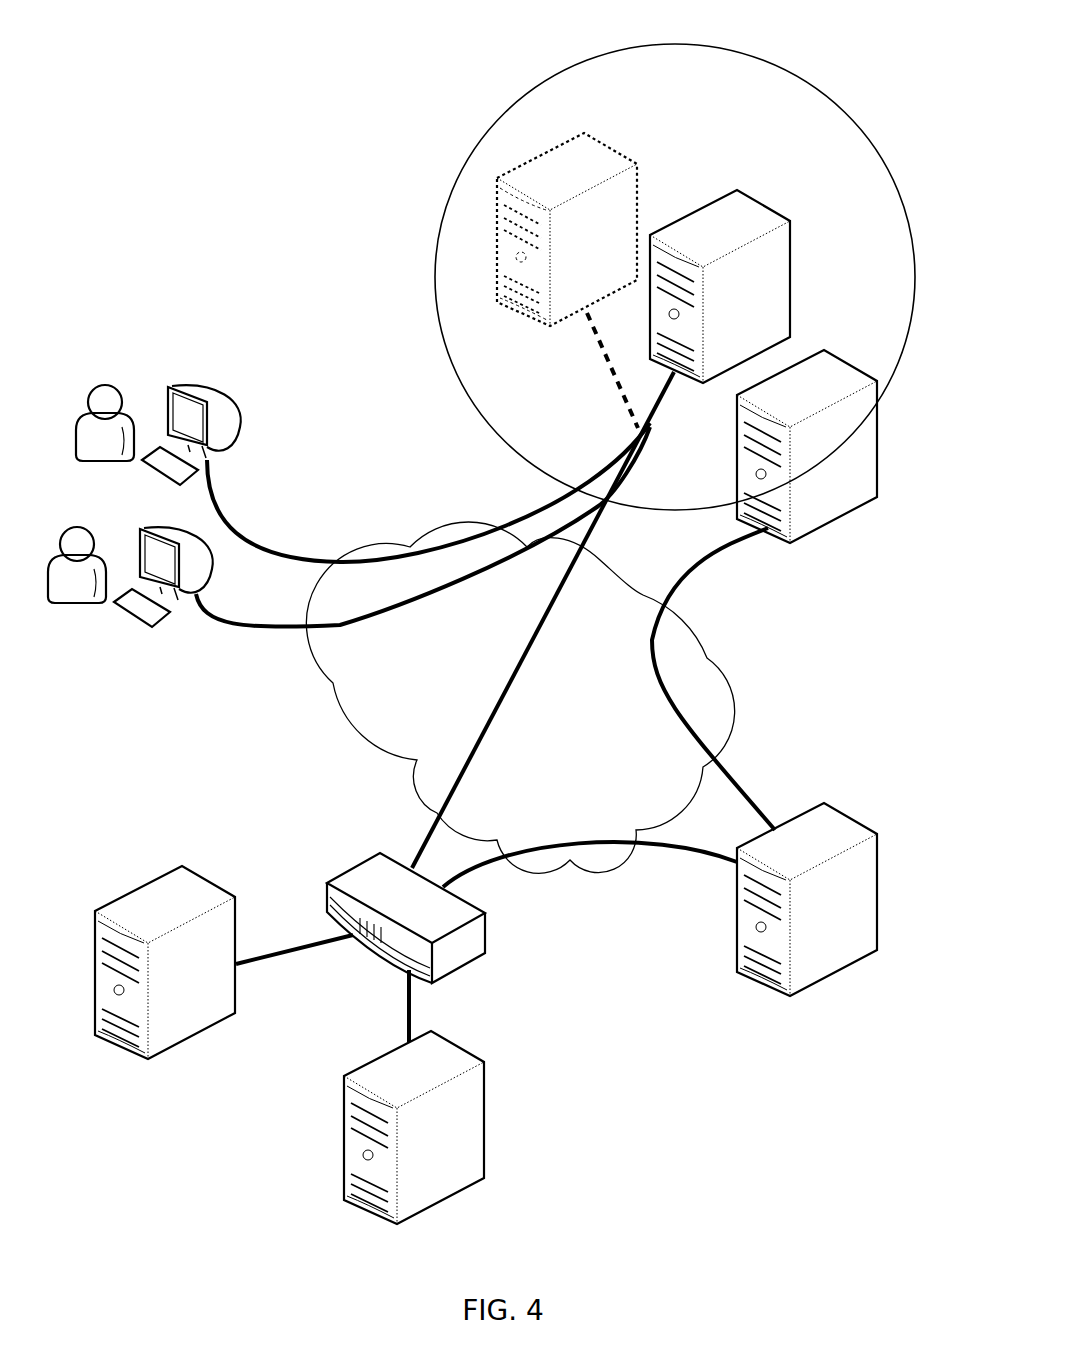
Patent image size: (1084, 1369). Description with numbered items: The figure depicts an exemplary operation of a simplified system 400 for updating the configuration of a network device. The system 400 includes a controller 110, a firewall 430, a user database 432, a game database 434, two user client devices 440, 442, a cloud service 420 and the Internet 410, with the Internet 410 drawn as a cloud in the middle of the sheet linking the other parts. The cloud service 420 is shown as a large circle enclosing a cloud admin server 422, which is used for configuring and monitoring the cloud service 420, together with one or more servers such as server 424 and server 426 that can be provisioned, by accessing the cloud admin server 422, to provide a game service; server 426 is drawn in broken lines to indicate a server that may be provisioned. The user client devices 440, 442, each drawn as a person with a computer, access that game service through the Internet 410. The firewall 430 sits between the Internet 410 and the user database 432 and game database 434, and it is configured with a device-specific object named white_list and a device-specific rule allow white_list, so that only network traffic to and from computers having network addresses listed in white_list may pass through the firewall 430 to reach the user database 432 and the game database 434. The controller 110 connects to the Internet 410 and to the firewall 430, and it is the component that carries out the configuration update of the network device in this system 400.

The system 400 is at (504, 639).
The Internet 410 is at (727, 698).
The cloud service 420 is at (895, 173).
The cloud admin server 422 is at (827, 533).
The server 424 is at (753, 202).
The server 426 is at (606, 142).
The firewall 430 is at (492, 937).
The user database 432 is at (170, 1053).
The game database 434 is at (420, 1218).
The user client device 440 is at (203, 382).
The user client device 442 is at (173, 623).
The controller 110 is at (827, 988).